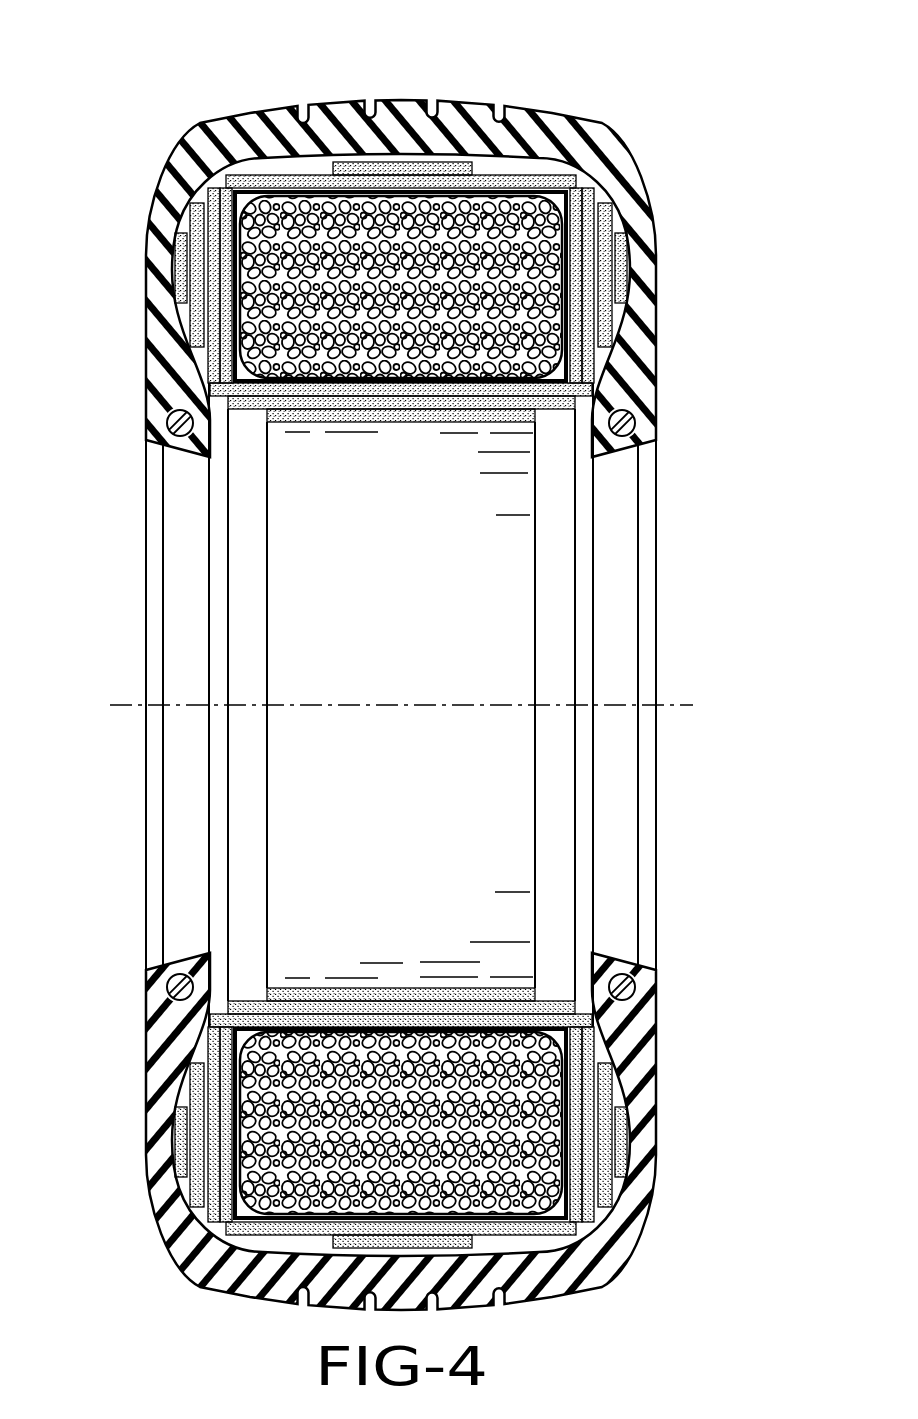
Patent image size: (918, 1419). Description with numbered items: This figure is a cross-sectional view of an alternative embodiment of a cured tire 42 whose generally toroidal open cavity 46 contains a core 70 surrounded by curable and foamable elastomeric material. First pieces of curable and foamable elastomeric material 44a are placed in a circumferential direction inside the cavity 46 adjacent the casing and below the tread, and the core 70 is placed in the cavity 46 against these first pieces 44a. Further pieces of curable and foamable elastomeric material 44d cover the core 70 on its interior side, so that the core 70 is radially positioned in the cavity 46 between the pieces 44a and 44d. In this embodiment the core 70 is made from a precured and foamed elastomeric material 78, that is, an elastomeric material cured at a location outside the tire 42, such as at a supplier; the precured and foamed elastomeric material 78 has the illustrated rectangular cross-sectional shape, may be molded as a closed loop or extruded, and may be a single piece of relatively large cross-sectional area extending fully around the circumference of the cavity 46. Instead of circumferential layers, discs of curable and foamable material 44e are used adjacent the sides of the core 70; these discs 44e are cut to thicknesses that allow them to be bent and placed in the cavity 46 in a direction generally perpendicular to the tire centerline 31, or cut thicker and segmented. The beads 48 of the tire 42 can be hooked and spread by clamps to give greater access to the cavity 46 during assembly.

The cured tire 42 is at (212, 104).
The first pieces of curable and foamable elastomeric material 44a is at (398, 172).
The core 70 is at (522, 214).
The open cavity 46 is at (207, 190).
The discs of curable and foamable material 44e is at (207, 276).
The precured and foamed elastomeric material 78 is at (500, 318).
The beads 48 is at (176, 410).
The pieces of curable and foamable elastomeric material 44d is at (397, 400).
The centerline 31 is at (382, 705).